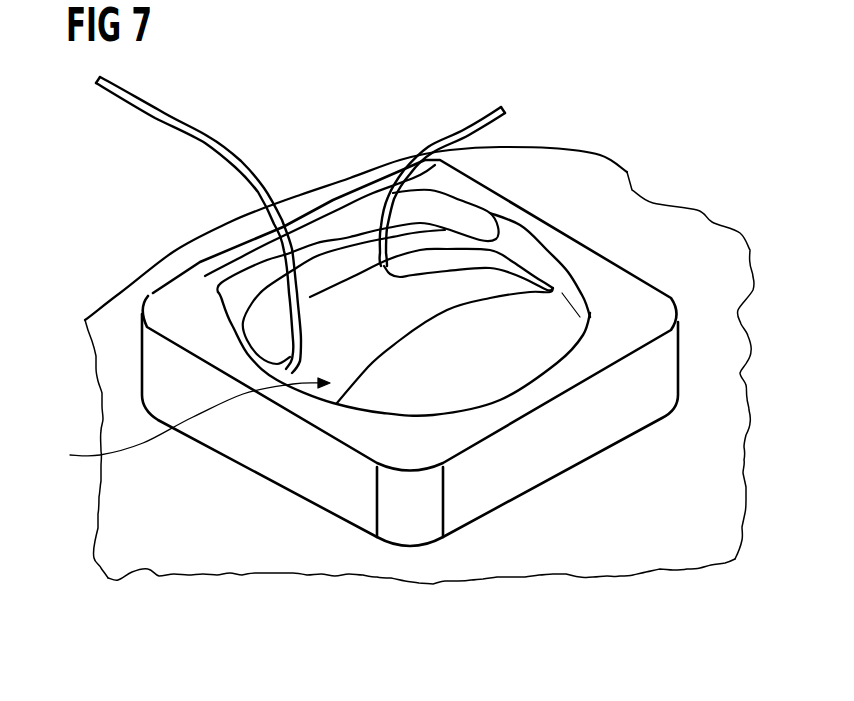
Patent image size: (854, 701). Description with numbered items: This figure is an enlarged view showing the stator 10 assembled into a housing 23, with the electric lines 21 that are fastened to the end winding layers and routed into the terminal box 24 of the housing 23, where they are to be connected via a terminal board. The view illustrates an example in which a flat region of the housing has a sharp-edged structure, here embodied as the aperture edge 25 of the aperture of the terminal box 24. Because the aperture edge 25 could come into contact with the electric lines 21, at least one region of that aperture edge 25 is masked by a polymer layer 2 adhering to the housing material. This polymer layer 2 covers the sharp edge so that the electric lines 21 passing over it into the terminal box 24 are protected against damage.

The polymer layer 2 is at (309, 233).
The stator 10 is at (353, 300).
The electric lines 21 is at (203, 133).
The housing 23 is at (592, 170).
The terminal box 24 is at (183, 428).
The aperture edge 25 is at (520, 224).